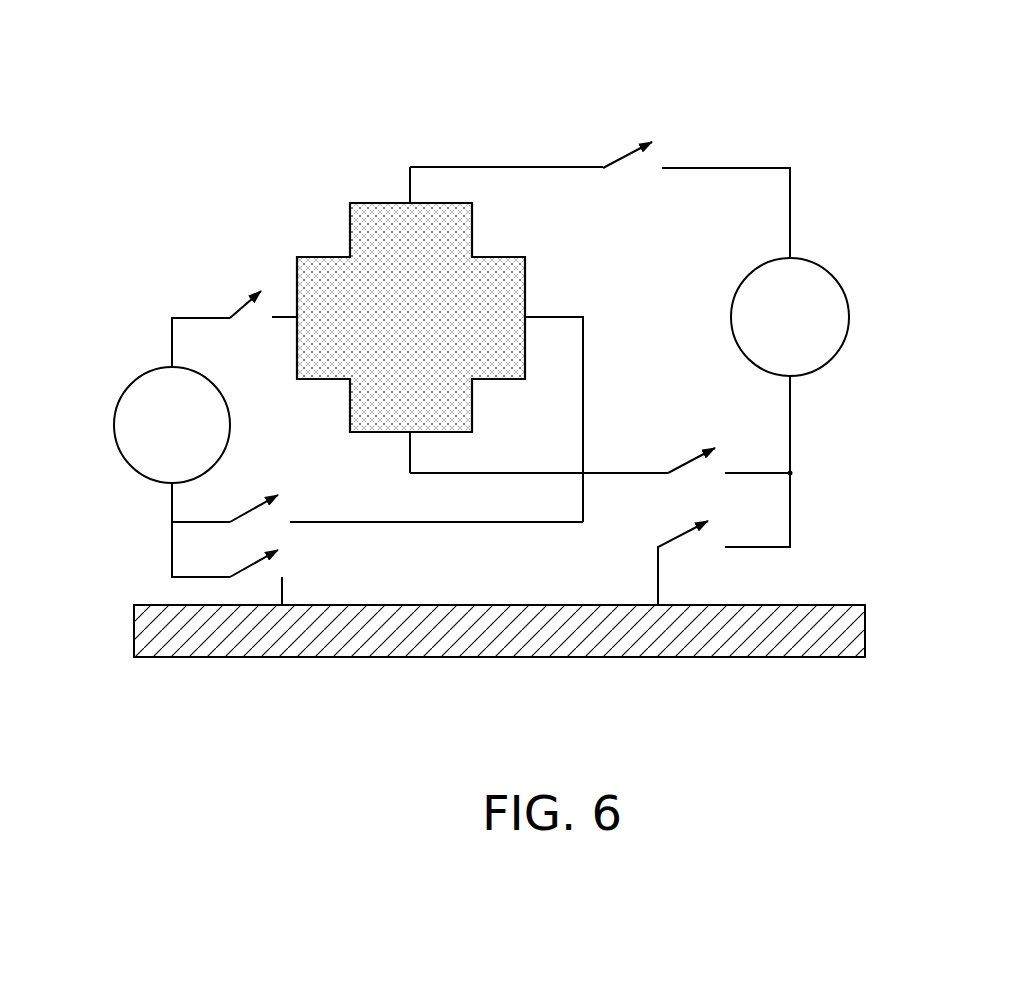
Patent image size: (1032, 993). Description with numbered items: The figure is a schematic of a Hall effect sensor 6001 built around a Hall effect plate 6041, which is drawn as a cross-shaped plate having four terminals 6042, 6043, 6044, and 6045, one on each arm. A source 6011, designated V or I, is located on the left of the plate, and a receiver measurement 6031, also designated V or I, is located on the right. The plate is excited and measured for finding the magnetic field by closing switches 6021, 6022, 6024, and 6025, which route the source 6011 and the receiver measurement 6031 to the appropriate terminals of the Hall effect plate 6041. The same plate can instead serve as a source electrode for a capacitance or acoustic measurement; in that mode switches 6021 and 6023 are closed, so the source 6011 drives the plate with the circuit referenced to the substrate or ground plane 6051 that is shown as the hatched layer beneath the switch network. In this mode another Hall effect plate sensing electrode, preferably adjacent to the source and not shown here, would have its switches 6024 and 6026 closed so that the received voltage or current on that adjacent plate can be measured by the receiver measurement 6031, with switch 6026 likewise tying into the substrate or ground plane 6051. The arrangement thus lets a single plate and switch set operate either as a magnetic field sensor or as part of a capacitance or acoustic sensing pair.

The Hall effect sensor 6001 is at (241, 84).
The source 6011 is at (113, 428).
The switch 6021 is at (234, 300).
The switch 6022 is at (252, 510).
The switch 6023 is at (250, 566).
The switch 6024 is at (625, 152).
The switch 6025 is at (688, 457).
The switch 6026 is at (678, 533).
The receiver measurement 6031 is at (815, 262).
The Hall effect plate 6041 is at (485, 255).
The terminal 6042 is at (408, 192).
The terminal 6043 is at (408, 448).
The terminal 6044 is at (286, 316).
The terminal 6045 is at (550, 315).
The substrate or ground plane 6051 is at (835, 603).